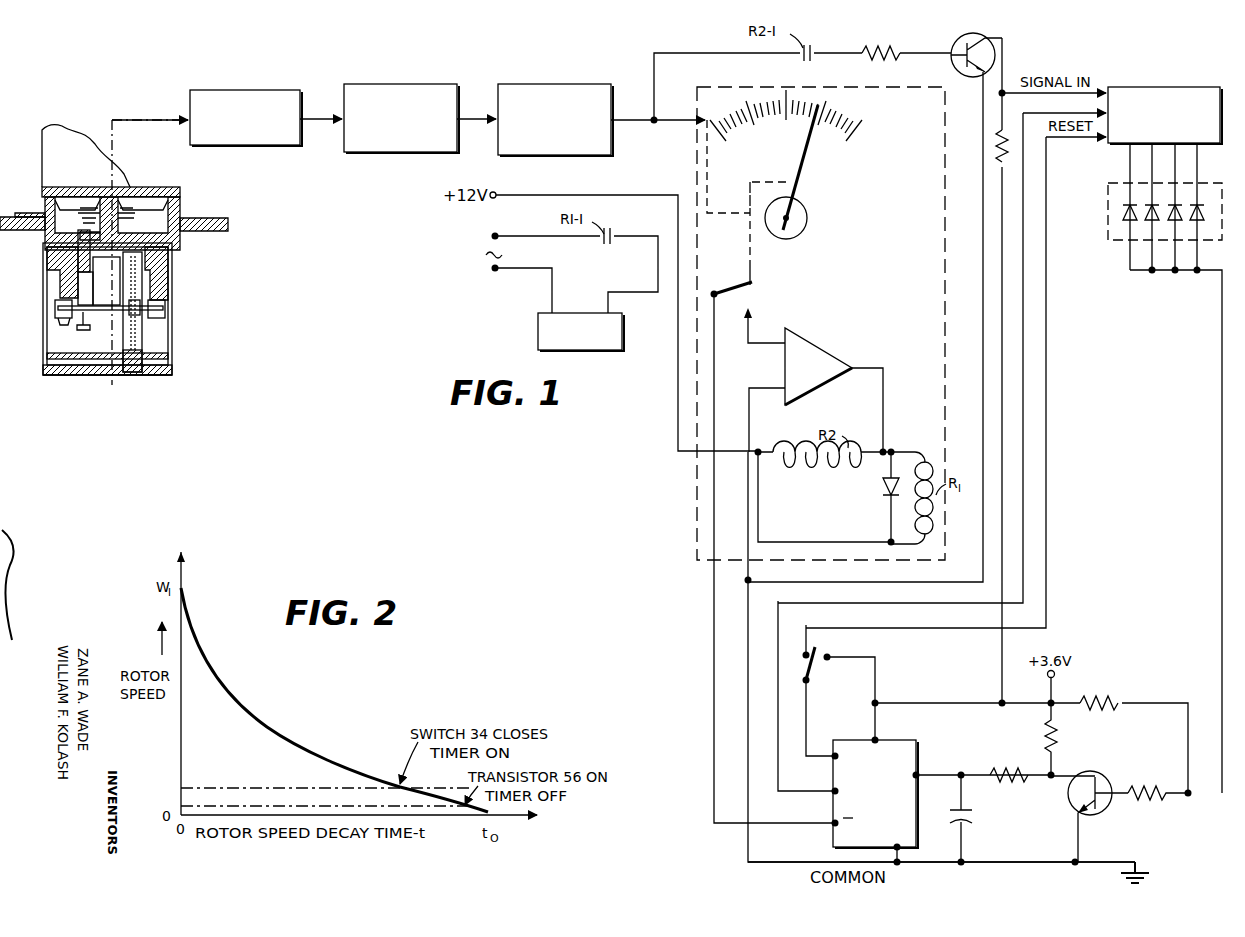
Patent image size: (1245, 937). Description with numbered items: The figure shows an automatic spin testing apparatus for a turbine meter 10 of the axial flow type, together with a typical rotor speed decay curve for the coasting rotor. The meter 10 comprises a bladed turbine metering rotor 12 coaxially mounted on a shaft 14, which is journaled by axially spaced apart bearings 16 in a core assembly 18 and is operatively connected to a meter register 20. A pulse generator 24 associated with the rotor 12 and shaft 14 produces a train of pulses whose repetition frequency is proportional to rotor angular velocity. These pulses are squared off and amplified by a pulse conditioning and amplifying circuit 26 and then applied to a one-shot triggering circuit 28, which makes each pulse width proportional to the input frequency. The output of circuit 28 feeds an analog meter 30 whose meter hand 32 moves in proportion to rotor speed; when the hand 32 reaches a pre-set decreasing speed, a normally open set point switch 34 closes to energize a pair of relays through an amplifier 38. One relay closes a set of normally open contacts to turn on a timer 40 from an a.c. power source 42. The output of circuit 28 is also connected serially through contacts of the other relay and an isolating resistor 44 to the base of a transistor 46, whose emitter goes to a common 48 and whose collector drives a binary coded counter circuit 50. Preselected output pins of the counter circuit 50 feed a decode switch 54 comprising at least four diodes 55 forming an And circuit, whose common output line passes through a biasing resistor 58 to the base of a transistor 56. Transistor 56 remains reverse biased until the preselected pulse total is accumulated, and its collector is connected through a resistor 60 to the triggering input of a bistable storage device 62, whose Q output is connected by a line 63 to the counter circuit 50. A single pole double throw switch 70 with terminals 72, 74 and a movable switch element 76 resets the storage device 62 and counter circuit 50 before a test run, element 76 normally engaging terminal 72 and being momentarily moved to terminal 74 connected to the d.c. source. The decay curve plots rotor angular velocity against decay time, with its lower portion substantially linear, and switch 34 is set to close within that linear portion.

The turbine meter 10 is at (107, 378).
The bladed turbine metering rotor 12 is at (135, 365).
The shaft 14 is at (102, 312).
The bearings 16 is at (55, 308).
The core assembly 18 is at (67, 380).
The meter register 20 is at (50, 162).
The pulse generator 24 is at (272, 90).
The pulse conditioning and amplifying circuit 26 is at (424, 84).
The one-shot triggering circuit 28 is at (567, 84).
The analog meter 30 is at (757, 75).
The meter hand 32 is at (803, 168).
The set point switch 34 is at (740, 287).
The amplifier 38 is at (820, 344).
The timer 40 is at (538, 333).
The a.c. power source 42 is at (506, 255).
The isolating resistor 44 is at (886, 50).
The transistor 46 is at (962, 46).
The common 48 is at (746, 854).
The binary coded counter circuit 50 is at (1186, 87).
The decode switch 54 is at (1108, 210).
The diodes 55 is at (1130, 225).
The transistor 56 is at (1100, 774).
The biasing resistor 58 is at (1152, 790).
The resistor 60 is at (1012, 783).
The bistable data bit storage device 62 is at (916, 746).
The line 63 is at (1023, 278).
The single pole double throw switch 70 is at (828, 690).
The terminal 72 is at (805, 652).
The terminal 74 is at (829, 660).
The movable switch element 76 is at (804, 681).